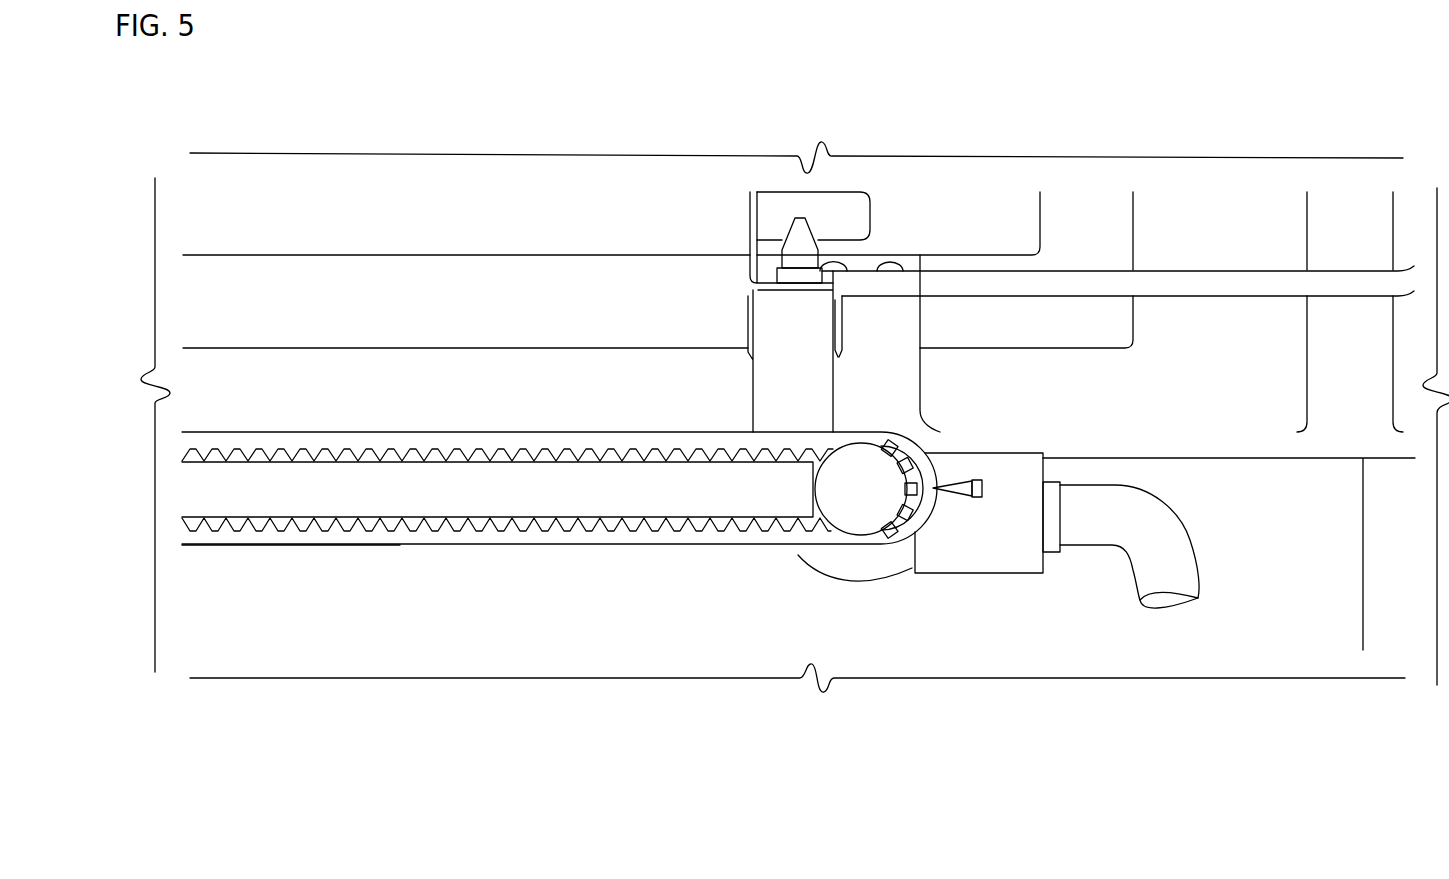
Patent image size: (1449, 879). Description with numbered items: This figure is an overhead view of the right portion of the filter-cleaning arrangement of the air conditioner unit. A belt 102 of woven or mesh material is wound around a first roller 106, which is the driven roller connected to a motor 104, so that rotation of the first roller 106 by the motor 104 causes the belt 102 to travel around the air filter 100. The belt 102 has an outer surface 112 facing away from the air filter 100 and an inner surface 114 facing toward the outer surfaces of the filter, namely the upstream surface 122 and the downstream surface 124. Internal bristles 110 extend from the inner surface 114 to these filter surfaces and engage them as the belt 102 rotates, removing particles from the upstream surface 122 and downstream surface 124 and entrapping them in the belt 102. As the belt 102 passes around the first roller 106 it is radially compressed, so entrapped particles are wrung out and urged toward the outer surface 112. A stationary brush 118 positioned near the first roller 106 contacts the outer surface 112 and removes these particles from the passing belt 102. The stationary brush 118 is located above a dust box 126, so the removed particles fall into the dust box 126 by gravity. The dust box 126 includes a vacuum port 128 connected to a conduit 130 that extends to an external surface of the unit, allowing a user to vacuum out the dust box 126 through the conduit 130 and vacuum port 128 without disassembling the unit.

The air filter 100 is at (509, 383).
The belt 102 is at (403, 538).
The motor 104 is at (852, 567).
The first roller 106 is at (850, 512).
The internal bristles 110 is at (320, 452).
The outer surface 112 is at (606, 410).
The inner surface 114 is at (387, 507).
The stationary brush 118 is at (975, 498).
The upstream surface 122 is at (320, 546).
The downstream surface 124 is at (537, 458).
The dust box 126 is at (1000, 563).
The vacuum port 128 is at (1048, 543).
The conduit 130 is at (1187, 565).